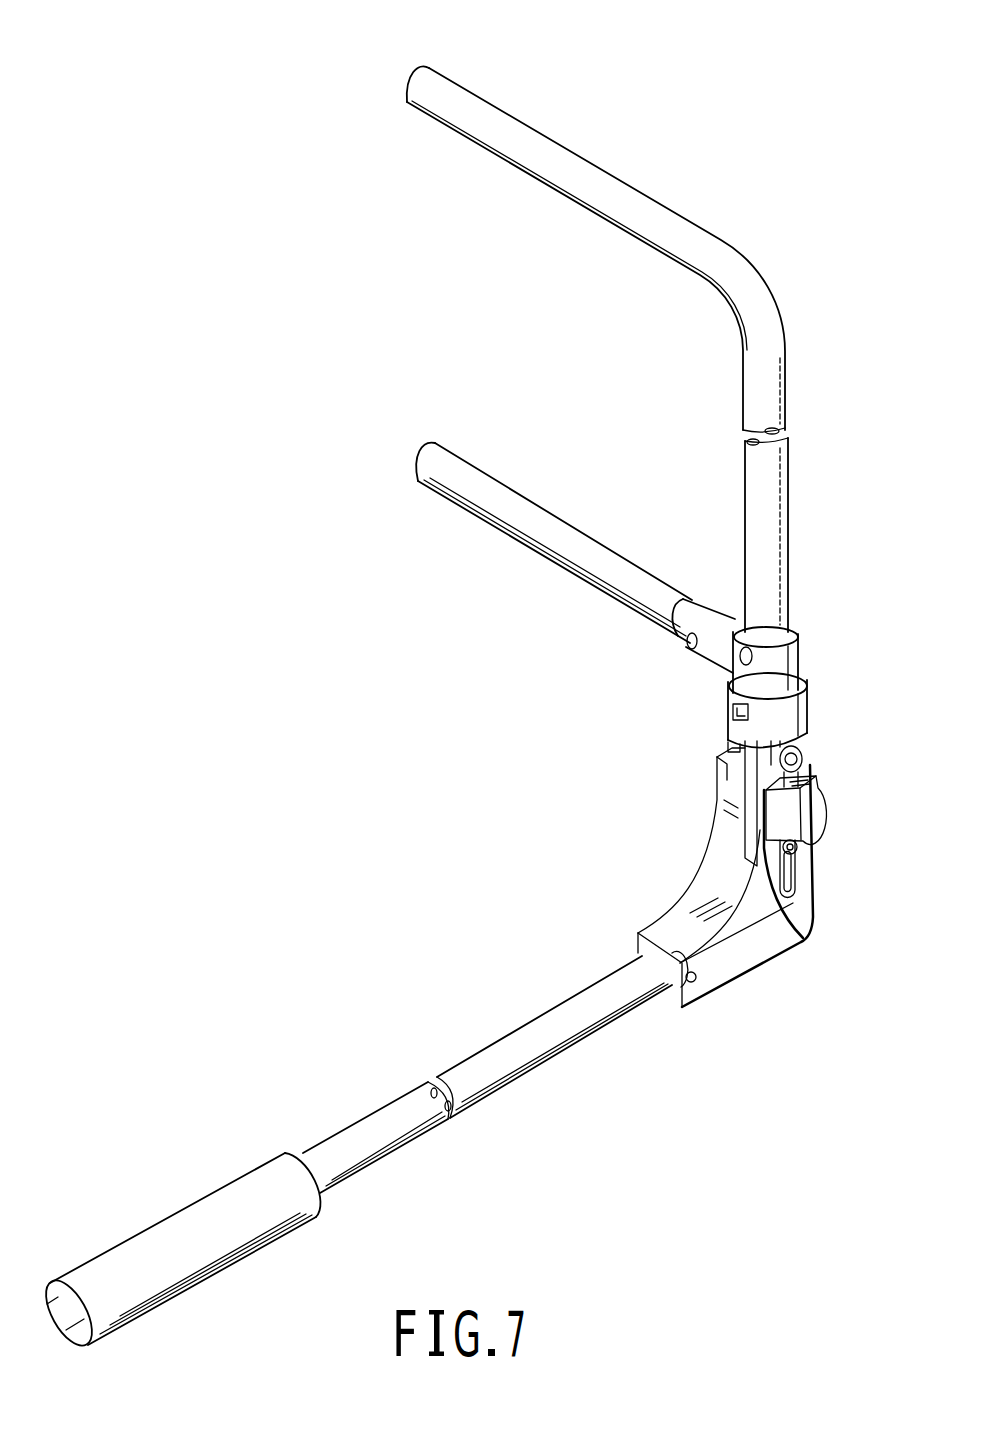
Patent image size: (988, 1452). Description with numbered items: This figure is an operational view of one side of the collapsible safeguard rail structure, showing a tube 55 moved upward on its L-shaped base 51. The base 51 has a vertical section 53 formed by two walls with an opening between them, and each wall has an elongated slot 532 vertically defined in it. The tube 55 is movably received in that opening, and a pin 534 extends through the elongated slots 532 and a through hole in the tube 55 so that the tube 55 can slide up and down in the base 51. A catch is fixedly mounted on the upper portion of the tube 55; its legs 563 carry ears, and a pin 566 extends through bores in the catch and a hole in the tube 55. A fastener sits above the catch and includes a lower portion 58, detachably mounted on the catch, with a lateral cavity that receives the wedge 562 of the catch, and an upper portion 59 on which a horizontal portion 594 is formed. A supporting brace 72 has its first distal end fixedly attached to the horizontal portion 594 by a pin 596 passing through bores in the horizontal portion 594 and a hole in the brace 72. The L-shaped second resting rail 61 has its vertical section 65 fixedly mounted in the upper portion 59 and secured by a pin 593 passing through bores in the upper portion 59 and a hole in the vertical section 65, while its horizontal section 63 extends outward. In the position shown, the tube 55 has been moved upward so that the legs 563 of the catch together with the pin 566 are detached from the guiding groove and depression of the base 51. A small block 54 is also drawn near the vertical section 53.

The second resting rail 61 is at (510, 78).
The horizontal section 63 is at (605, 183).
The vertical section 65 is at (777, 463).
The supporting brace 72 is at (477, 472).
The horizontal portion 594 is at (706, 606).
The pin 596 is at (687, 642).
The pin 593 is at (750, 646).
The upper portion 59 is at (797, 648).
The lower portion 58 is at (803, 703).
The wedge 562 is at (735, 712).
The leg 563 is at (730, 742).
The pin 566 is at (803, 756).
The tube 55 is at (752, 782).
The mounting block 54 is at (810, 808).
The pin 534 is at (797, 848).
The vertical section 53 is at (815, 890).
The elongated slot 532 is at (783, 902).
The L-shaped base 51 is at (744, 1004).